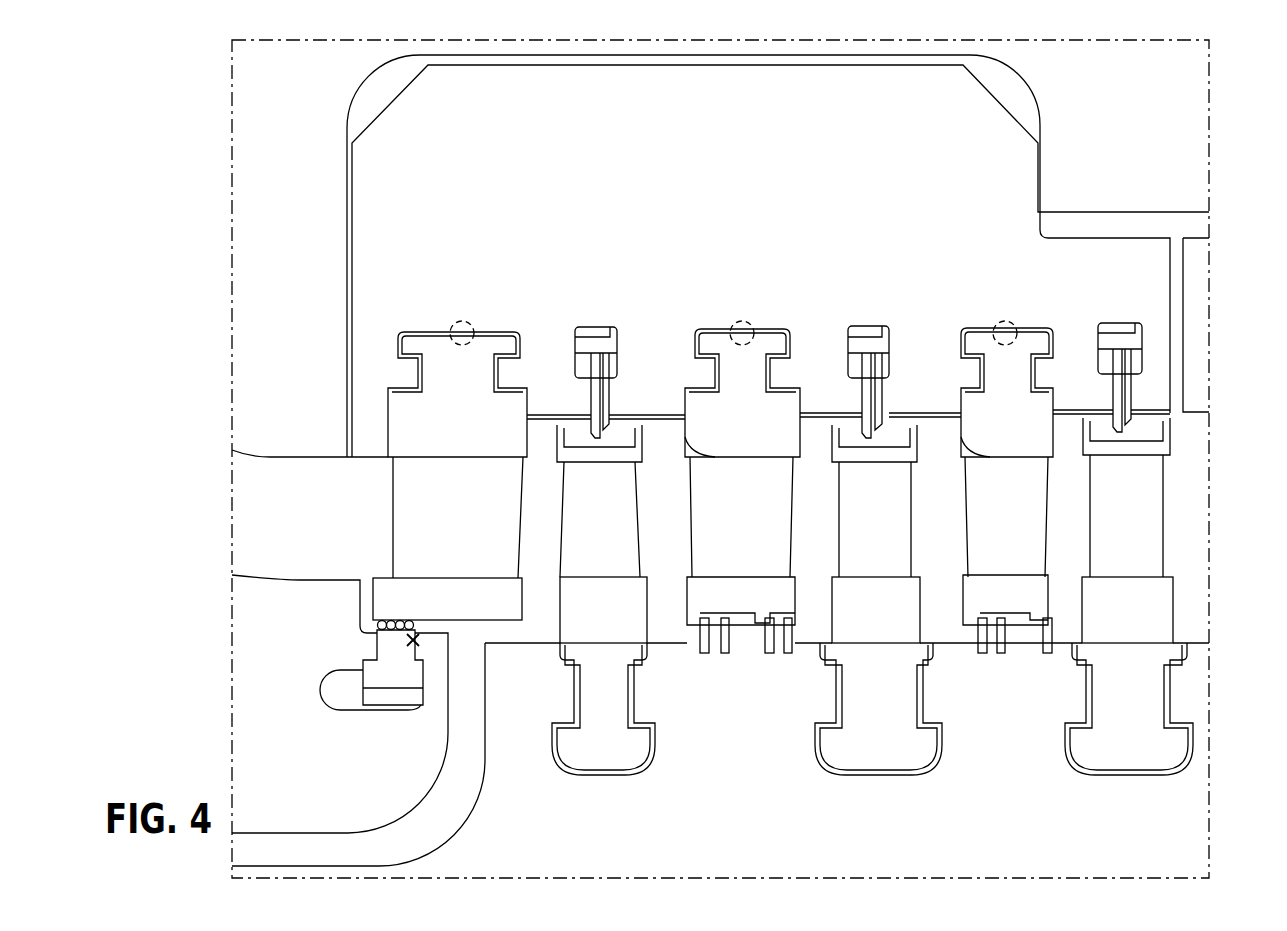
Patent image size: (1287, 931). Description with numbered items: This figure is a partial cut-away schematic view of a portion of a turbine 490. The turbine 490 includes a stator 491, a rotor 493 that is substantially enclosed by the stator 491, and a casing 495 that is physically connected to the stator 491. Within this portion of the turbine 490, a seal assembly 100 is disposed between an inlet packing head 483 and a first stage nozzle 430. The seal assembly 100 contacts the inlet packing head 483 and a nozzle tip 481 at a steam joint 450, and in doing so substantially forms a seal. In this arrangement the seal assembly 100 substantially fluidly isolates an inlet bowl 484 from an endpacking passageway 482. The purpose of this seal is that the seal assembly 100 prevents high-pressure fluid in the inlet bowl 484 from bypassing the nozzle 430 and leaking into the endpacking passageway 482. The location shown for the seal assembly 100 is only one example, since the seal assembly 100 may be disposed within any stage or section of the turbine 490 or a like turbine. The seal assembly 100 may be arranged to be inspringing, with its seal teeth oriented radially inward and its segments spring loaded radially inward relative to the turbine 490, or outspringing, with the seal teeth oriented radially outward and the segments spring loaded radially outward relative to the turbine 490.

The turbine 490 is at (268, 224).
The stator 491 is at (547, 202).
The casing 495 is at (300, 387).
The first stage nozzle 430 is at (446, 516).
The inlet bowl 484 is at (300, 538).
The nozzle tip 481 is at (438, 610).
The seal assembly 100 is at (415, 683).
The steam joint 450 is at (414, 641).
The inlet packing head 483 is at (319, 780).
The endpacking passageway 482 is at (462, 676).
The rotor 493 is at (749, 826).